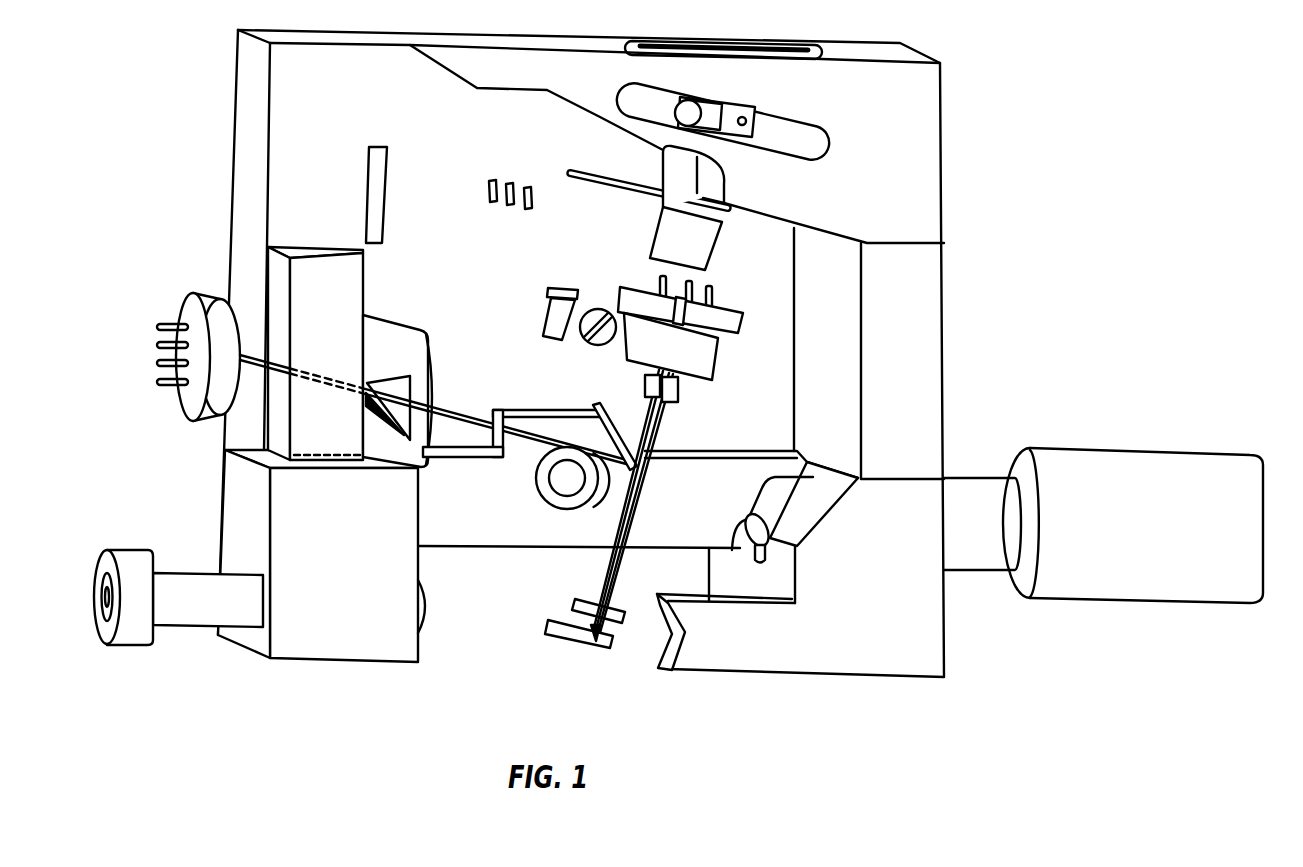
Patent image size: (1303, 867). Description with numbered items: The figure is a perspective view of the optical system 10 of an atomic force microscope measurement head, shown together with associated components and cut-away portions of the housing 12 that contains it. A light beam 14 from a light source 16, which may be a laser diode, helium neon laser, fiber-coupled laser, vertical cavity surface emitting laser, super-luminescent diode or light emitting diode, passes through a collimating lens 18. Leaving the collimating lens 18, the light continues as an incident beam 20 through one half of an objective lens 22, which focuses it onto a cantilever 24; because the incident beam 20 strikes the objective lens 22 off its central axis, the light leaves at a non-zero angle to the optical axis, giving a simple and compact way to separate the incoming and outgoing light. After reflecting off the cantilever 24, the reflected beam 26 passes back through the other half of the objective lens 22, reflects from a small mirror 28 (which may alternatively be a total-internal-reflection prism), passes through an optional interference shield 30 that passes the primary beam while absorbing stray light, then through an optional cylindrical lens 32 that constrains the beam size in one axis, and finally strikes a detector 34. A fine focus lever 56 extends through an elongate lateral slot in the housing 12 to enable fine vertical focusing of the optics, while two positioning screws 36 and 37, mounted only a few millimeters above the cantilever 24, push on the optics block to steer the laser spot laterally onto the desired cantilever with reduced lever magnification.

The optical system 10 is at (683, 361).
The housing 12 is at (925, 122).
The light beam 14 is at (645, 383).
The light source 16 is at (698, 371).
The collimating lens 18 is at (681, 396).
The incident beam 20 is at (637, 528).
The objective lens 22 is at (620, 607).
The cantilever 24 is at (590, 648).
The reflected beam 26 is at (592, 585).
The small mirror 28 is at (600, 406).
The interference shield 30 is at (403, 334).
The cylindrical lens 32 is at (353, 281).
The detector 34 is at (225, 300).
The positioning screw 36 is at (1210, 450).
The positioning screw 37 is at (540, 503).
The fine focus lever 56 is at (712, 102).